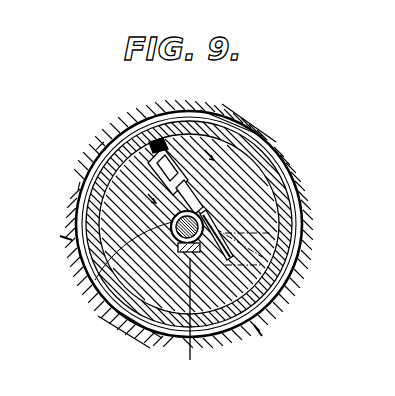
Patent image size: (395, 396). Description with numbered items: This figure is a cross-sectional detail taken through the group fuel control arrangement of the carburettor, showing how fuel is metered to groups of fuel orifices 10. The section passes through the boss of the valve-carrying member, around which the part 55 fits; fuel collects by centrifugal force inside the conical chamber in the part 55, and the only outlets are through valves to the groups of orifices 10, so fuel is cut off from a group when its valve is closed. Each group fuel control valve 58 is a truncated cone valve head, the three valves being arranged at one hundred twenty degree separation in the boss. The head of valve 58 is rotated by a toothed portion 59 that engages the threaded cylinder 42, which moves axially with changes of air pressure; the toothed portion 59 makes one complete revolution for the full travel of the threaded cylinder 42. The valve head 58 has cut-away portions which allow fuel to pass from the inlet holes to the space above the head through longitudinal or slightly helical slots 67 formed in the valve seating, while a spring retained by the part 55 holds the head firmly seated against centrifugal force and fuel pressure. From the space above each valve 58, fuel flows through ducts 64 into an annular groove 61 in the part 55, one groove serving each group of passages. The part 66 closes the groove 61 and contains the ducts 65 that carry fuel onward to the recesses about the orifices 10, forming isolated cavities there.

The fuel orifices 10 is at (186, 186).
The threaded cylinder 42 is at (212, 240).
The part 55 is at (275, 163).
The group fuel control valve 58 is at (238, 124).
The toothed portion 59 is at (205, 213).
The annular groove 61 is at (285, 182).
The duct 64 is at (167, 146).
The duct 65 is at (70, 235).
The part 66 is at (79, 181).
The slot 67 is at (100, 158).